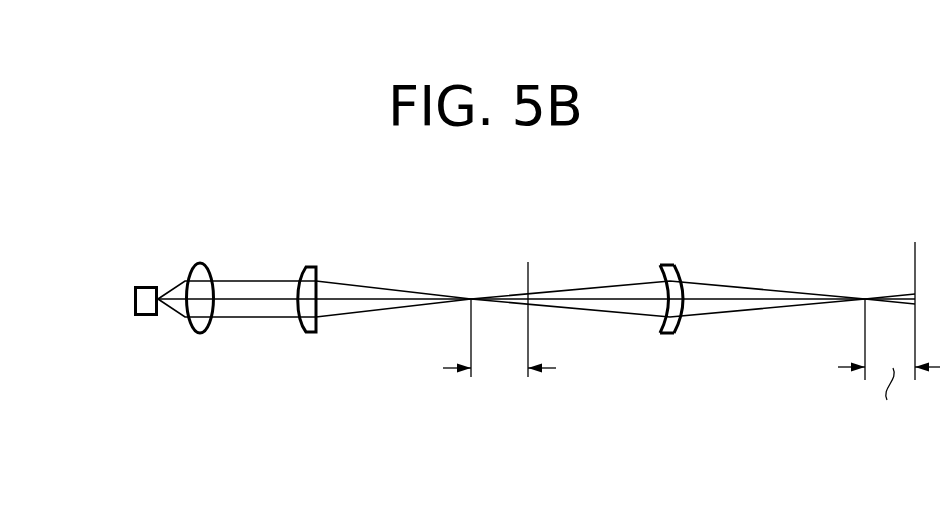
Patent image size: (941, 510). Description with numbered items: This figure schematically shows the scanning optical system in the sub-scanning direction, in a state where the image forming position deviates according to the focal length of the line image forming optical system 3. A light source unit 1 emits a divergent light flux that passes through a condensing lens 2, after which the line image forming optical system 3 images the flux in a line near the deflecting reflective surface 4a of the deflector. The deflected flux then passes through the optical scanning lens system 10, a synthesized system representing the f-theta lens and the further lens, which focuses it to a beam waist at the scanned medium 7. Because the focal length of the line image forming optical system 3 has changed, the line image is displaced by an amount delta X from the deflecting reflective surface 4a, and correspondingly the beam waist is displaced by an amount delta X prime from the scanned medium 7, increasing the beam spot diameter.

The light source unit 1 is at (140, 285).
The condensing lens 2 is at (199, 262).
The line image forming optical system 3 is at (306, 263).
The deflecting reflective surface 4a is at (499, 301).
The optical scanning lens system 10 is at (668, 262).
The scanned medium 7 is at (915, 258).